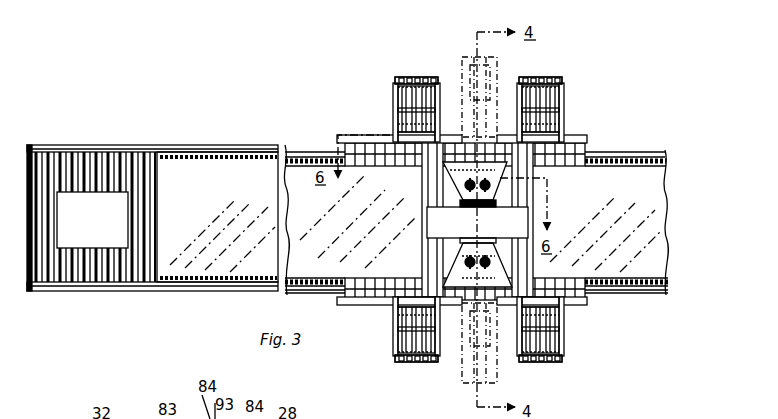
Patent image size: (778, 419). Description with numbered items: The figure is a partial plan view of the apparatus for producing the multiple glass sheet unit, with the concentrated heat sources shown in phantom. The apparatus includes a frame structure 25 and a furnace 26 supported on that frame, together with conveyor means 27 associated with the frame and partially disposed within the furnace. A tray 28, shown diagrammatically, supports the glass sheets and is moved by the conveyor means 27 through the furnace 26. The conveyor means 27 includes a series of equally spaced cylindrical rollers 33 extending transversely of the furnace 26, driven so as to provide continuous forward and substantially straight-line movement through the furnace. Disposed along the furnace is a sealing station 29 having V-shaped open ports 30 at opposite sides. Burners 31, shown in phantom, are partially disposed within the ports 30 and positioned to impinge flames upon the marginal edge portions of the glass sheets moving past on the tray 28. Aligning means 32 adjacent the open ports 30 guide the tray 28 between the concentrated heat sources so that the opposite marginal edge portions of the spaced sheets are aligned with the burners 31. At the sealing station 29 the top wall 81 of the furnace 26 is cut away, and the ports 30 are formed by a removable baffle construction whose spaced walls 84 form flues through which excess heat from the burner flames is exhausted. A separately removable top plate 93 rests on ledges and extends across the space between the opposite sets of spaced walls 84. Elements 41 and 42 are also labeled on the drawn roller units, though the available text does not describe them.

The frame structure 25 is at (152, 148).
The furnace 26 is at (210, 250).
The conveyor means 27 is at (62, 150).
The tray 28 is at (103, 222).
The sealing station 29 is at (499, 97).
The open ports 30 is at (562, 141).
The burners 31 is at (464, 80).
The aligning means 32 is at (412, 72).
The cylindrical rollers 33 is at (112, 165).
The roller housing 41 is at (392, 104).
The cap plate 42 is at (400, 78).
The top wall 81 is at (205, 175).
The spaced walls 84 is at (462, 203).
The top plate 93 is at (582, 160).